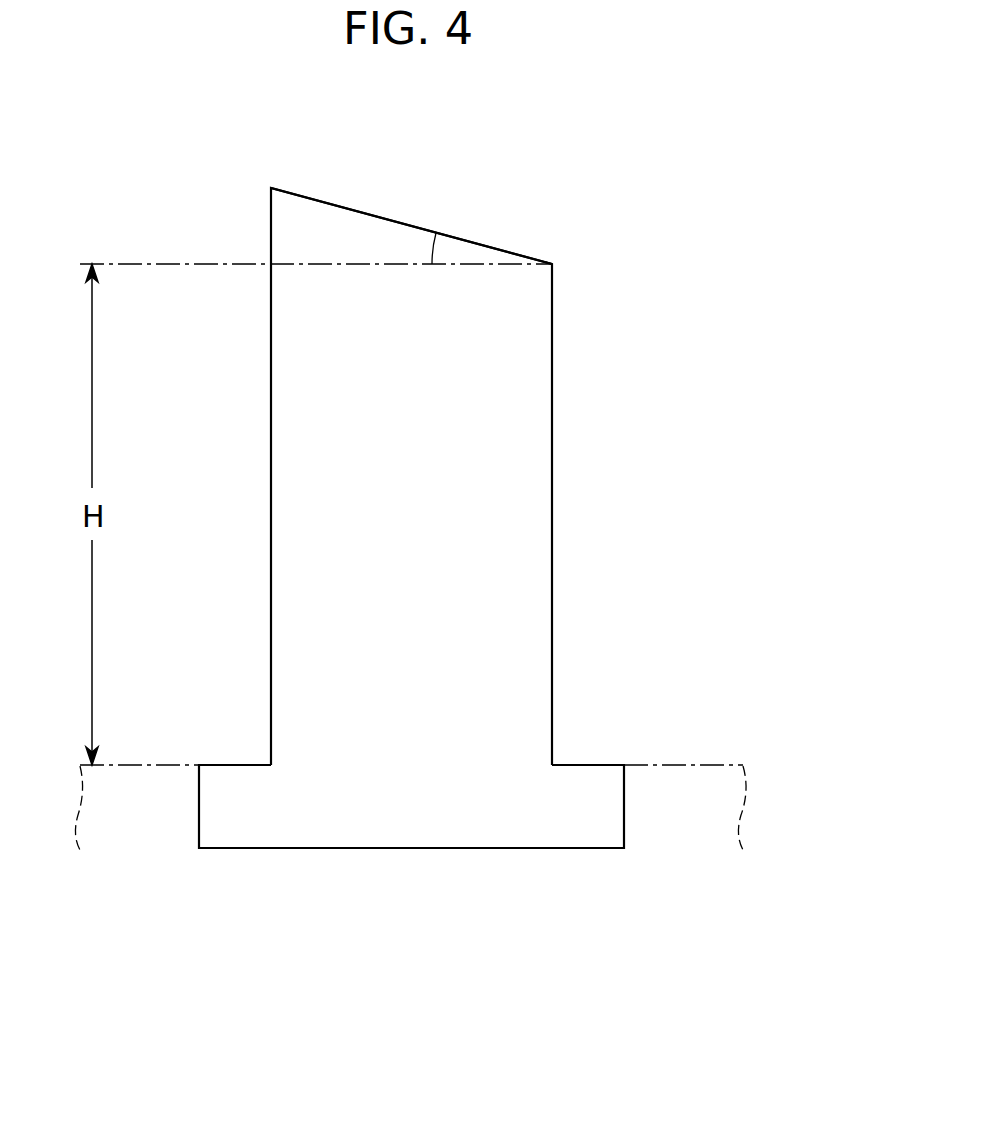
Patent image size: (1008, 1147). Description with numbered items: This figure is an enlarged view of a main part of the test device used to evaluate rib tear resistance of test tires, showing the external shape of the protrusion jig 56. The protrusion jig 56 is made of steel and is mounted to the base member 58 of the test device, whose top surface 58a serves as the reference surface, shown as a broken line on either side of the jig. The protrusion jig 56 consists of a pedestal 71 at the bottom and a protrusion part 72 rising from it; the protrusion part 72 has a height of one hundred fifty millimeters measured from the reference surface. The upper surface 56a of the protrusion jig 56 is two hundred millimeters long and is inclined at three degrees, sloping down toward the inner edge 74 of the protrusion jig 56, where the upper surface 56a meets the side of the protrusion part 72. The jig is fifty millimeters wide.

The protrusion jig 56 is at (322, 174).
The upper surface of protrusion jig 56a is at (472, 242).
The inner edge of protrusion jig 74 is at (562, 262).
The protrusion part 72 is at (500, 730).
The pedestal 71 is at (587, 820).
The top surface of base member 58a is at (686, 765).
The base member 58 is at (727, 786).